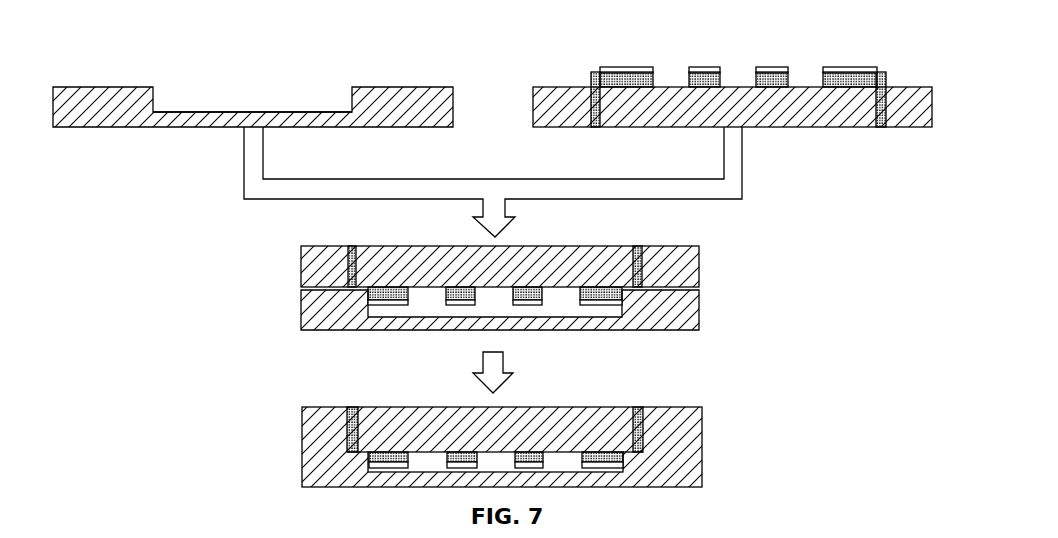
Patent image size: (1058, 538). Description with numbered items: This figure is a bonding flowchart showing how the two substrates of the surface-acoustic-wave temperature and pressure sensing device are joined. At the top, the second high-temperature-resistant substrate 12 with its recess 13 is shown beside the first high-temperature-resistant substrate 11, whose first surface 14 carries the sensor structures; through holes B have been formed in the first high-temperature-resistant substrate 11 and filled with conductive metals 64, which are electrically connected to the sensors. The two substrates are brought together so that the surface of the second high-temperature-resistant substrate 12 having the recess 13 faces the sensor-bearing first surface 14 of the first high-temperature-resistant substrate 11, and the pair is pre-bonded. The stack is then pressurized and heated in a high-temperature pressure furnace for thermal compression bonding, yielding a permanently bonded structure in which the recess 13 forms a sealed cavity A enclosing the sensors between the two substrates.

The first high-temperature-resistant substrate 11 is at (553, 100).
The second high-temperature-resistant substrate 12 is at (383, 103).
The recess 13 is at (314, 110).
The first surface 14 is at (573, 87).
The conductive metals 64 is at (882, 72).
The sealed cavity A is at (564, 314).
The through holes B is at (887, 113).